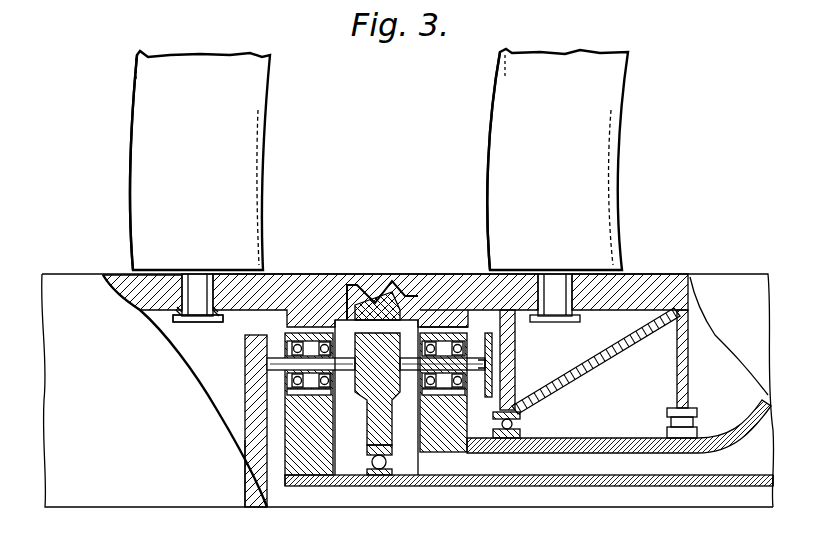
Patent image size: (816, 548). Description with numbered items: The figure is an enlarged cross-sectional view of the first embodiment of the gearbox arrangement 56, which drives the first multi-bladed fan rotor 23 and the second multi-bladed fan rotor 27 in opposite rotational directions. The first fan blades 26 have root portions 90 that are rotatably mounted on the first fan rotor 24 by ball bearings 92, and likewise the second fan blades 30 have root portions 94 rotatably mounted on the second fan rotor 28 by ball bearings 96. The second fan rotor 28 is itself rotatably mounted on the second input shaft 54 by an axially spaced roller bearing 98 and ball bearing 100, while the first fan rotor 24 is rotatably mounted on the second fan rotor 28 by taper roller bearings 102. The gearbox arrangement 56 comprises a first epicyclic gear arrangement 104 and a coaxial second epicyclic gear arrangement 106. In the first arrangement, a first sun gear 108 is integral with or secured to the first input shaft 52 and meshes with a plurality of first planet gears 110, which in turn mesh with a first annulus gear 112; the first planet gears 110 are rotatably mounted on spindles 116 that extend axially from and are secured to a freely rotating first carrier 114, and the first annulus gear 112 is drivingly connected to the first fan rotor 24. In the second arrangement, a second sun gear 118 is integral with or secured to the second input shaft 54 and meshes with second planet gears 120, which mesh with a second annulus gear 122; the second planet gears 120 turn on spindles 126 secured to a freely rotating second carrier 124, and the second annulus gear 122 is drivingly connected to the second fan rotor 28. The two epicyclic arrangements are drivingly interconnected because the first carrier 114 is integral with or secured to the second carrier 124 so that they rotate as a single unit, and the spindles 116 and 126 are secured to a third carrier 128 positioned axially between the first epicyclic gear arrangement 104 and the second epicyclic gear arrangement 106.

The first multi-bladed fan rotor 23 is at (130, 152).
The first fan rotor 24 is at (128, 281).
The first fan blades 26 is at (152, 82).
The second multi-bladed fan rotor 27 is at (484, 146).
The second fan rotor 28 is at (498, 288).
The second fan blades 30 is at (510, 88).
The first input shaft 52 is at (757, 483).
The second input shaft 54 is at (697, 457).
The gearbox arrangement 56 is at (234, 408).
The root portions 90 is at (197, 309).
The ball bearings 92 is at (177, 311).
The root portions 94 is at (560, 278).
The ball bearings 96 is at (637, 289).
The roller bearing 98 is at (692, 423).
The ball bearing 100 is at (520, 412).
The taper roller bearings 102 is at (397, 290).
The first epicyclic gear arrangement 104 is at (350, 480).
The second epicyclic gear arrangement 106 is at (474, 428).
The first sun gear 108 is at (298, 428).
The first planet gears 110 is at (315, 333).
The first annulus gear 112 is at (300, 340).
The first carrier 114 is at (254, 464).
The spindles 116 is at (246, 381).
The second sun gear 118 is at (445, 414).
The second planet gears 120 is at (449, 300).
The second annulus gear 122 is at (443, 336).
The second carrier 124 is at (491, 341).
The spindles 126 is at (478, 363).
The third carrier 128 is at (362, 435).